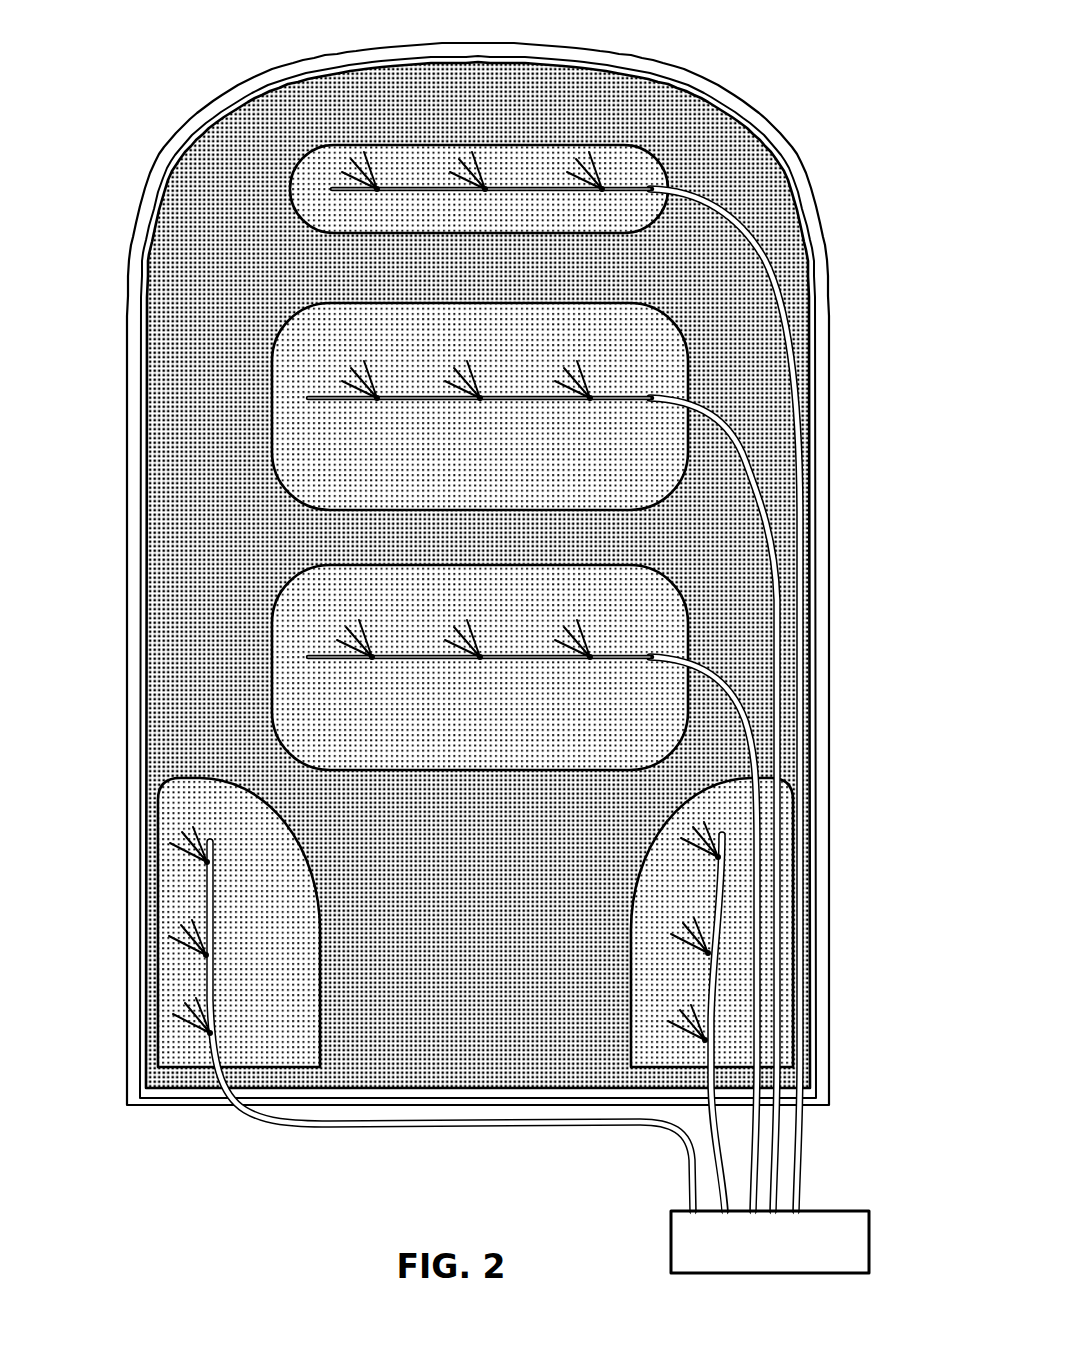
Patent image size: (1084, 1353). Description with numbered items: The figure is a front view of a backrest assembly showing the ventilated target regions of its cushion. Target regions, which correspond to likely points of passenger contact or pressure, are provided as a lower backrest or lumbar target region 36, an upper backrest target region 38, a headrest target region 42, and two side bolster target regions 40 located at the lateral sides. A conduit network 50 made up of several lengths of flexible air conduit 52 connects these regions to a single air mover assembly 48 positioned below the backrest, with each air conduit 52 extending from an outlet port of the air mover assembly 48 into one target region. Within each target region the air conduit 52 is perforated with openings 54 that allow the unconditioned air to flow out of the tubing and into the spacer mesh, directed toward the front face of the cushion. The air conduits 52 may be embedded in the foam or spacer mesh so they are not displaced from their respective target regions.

The lower backrest target region 36 is at (690, 605).
The upper backrest target region 38 is at (690, 378).
The side bolster target regions 40 is at (160, 797).
The headrest target region 42 is at (663, 165).
The air mover assembly 48 is at (869, 1240).
The conduit network 50 is at (808, 1180).
The air conduit 52 is at (775, 298).
The openings 54 is at (600, 187).